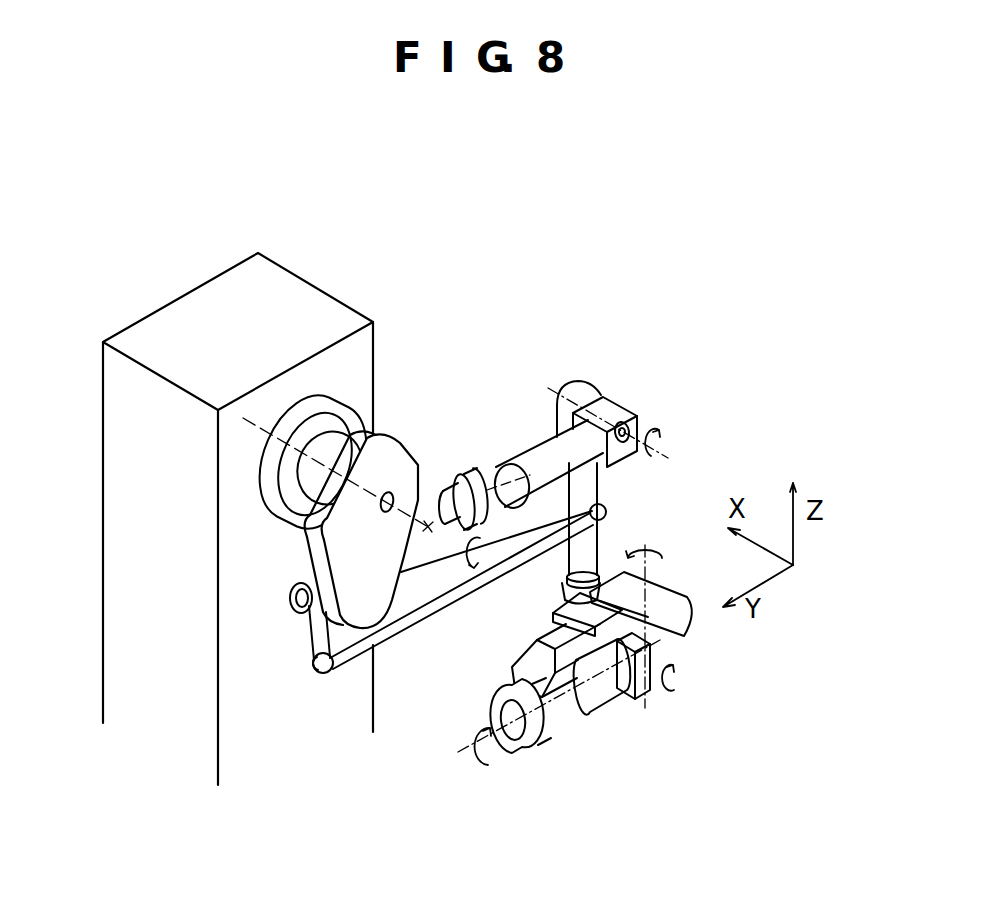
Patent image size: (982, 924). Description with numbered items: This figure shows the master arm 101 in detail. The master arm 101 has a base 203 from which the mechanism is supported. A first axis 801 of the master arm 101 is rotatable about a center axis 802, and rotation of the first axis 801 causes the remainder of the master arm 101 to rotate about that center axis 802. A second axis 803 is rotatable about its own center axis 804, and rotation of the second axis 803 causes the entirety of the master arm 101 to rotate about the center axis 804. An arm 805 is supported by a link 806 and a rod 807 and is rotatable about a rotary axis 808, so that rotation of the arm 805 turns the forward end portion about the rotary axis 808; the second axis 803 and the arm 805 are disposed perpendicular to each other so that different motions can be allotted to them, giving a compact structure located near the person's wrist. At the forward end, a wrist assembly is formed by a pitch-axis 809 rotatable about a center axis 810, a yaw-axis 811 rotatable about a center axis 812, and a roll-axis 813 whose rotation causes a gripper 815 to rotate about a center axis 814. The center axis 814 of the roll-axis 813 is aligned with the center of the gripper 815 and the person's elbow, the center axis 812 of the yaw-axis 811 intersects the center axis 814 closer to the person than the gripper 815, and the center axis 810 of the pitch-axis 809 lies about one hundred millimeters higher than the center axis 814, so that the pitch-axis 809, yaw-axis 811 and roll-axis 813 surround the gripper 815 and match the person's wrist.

The base 203 is at (284, 279).
The center axis 802 is at (248, 418).
The first axis 801 is at (397, 443).
The link 806 is at (306, 636).
The rod 807 is at (484, 583).
The center axis 804 is at (440, 500).
The second axis 803 is at (541, 447).
The master arm 101 is at (600, 400).
The rotary axis 808 is at (661, 447).
The arm 805 is at (599, 486).
The pitch-axis 809 is at (553, 612).
The center axis 810 is at (683, 651).
The yaw-axis 811 is at (686, 582).
The roll-axis 813 is at (572, 735).
The gripper 815 is at (622, 700).
The center axis 812 is at (644, 712).
The center axis 814 is at (473, 767).